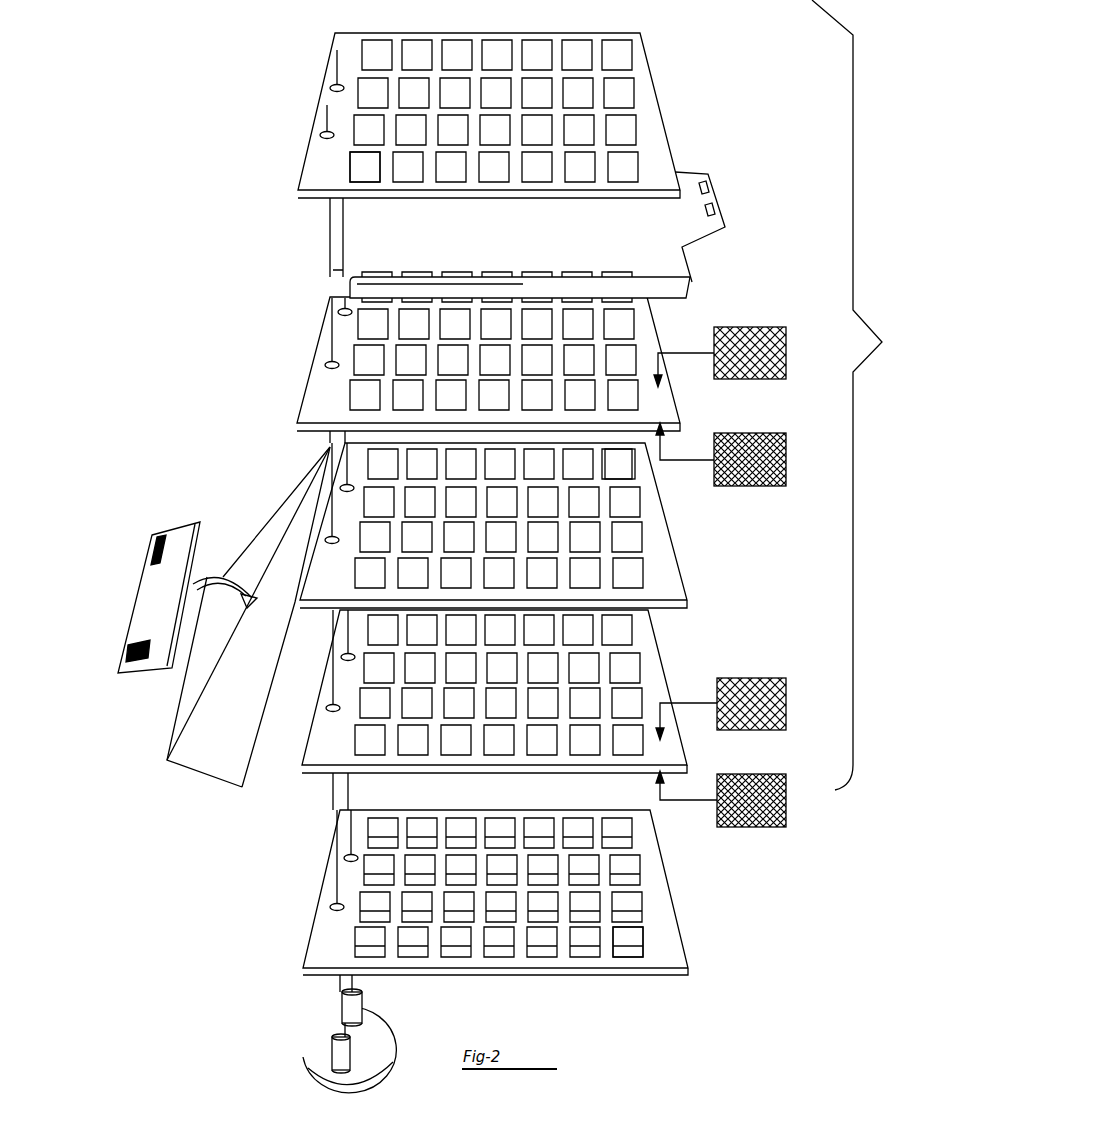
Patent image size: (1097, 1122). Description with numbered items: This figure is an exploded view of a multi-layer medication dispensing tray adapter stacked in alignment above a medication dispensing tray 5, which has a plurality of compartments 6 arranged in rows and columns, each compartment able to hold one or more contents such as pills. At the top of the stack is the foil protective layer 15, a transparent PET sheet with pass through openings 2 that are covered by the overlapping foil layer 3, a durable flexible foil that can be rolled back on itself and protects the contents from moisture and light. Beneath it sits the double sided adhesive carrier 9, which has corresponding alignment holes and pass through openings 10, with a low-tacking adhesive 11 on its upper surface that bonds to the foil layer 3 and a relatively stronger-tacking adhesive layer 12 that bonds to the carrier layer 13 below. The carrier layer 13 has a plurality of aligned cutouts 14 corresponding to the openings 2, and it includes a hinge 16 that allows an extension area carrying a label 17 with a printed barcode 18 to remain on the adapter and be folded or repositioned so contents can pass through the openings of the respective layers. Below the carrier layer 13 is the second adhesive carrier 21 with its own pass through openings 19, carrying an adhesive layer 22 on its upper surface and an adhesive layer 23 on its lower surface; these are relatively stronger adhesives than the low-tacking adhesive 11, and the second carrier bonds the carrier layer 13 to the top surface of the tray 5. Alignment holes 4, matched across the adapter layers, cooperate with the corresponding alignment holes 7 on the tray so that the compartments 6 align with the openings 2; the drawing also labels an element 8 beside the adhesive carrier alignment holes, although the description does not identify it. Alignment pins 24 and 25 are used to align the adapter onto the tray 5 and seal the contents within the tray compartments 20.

The pass through openings 2 is at (353, 273).
The foil layer 3 is at (680, 220).
The alignment holes 4 is at (310, 128).
The medication dispensing tray 5 is at (662, 923).
The compartments 6 is at (630, 950).
The alignment holes 7 is at (320, 914).
The plate pin 8 is at (330, 367).
The double sided adhesive carrier 9 is at (318, 403).
The pass through openings 10 is at (494, 342).
The low-tacking adhesive 11 is at (786, 336).
The stronger-tacking adhesive layer 12 is at (786, 447).
The carrier layer 13 is at (287, 528).
The cutouts 14 is at (493, 525).
The foil protective layer 15 is at (648, 102).
The hinge 16 is at (296, 606).
The label 17 is at (165, 595).
The barcode 18 is at (157, 530).
The pass through openings 19 is at (494, 687).
The compartments 20 is at (499, 887).
The second adhesive carrier 21 is at (330, 757).
The adhesive layer 22 is at (786, 690).
The adhesive layer 23 is at (786, 806).
The alignment pin 24 is at (340, 1057).
The alignment pin 25 is at (345, 1003).